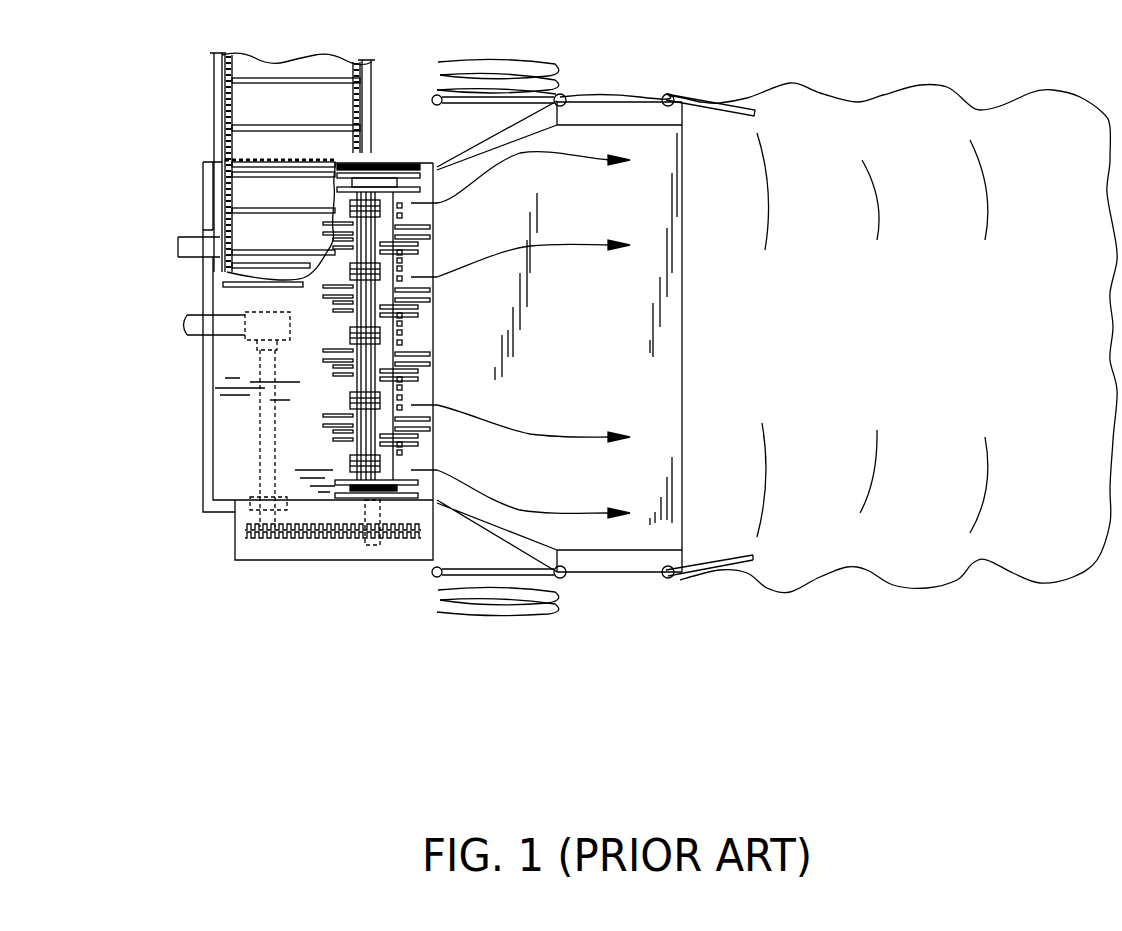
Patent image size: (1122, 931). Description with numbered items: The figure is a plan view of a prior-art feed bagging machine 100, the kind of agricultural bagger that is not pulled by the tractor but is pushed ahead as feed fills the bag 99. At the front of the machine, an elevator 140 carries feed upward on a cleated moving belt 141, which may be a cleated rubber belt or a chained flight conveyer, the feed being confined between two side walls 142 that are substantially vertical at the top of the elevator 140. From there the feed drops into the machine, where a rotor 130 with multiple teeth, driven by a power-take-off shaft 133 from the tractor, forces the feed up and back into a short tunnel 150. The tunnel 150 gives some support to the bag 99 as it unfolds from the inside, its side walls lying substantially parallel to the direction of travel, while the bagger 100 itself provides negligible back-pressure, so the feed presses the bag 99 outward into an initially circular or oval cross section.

The bag 99 is at (507, 66).
The feed bagging machine 100 is at (208, 512).
The rotor 130 is at (330, 398).
The power-take-off (PTO) shaft 133 is at (188, 323).
The elevator 140 is at (309, 146).
The cleated moving belt 141 is at (280, 65).
The side walls 142 is at (212, 76).
The tunnel 150 is at (641, 413).